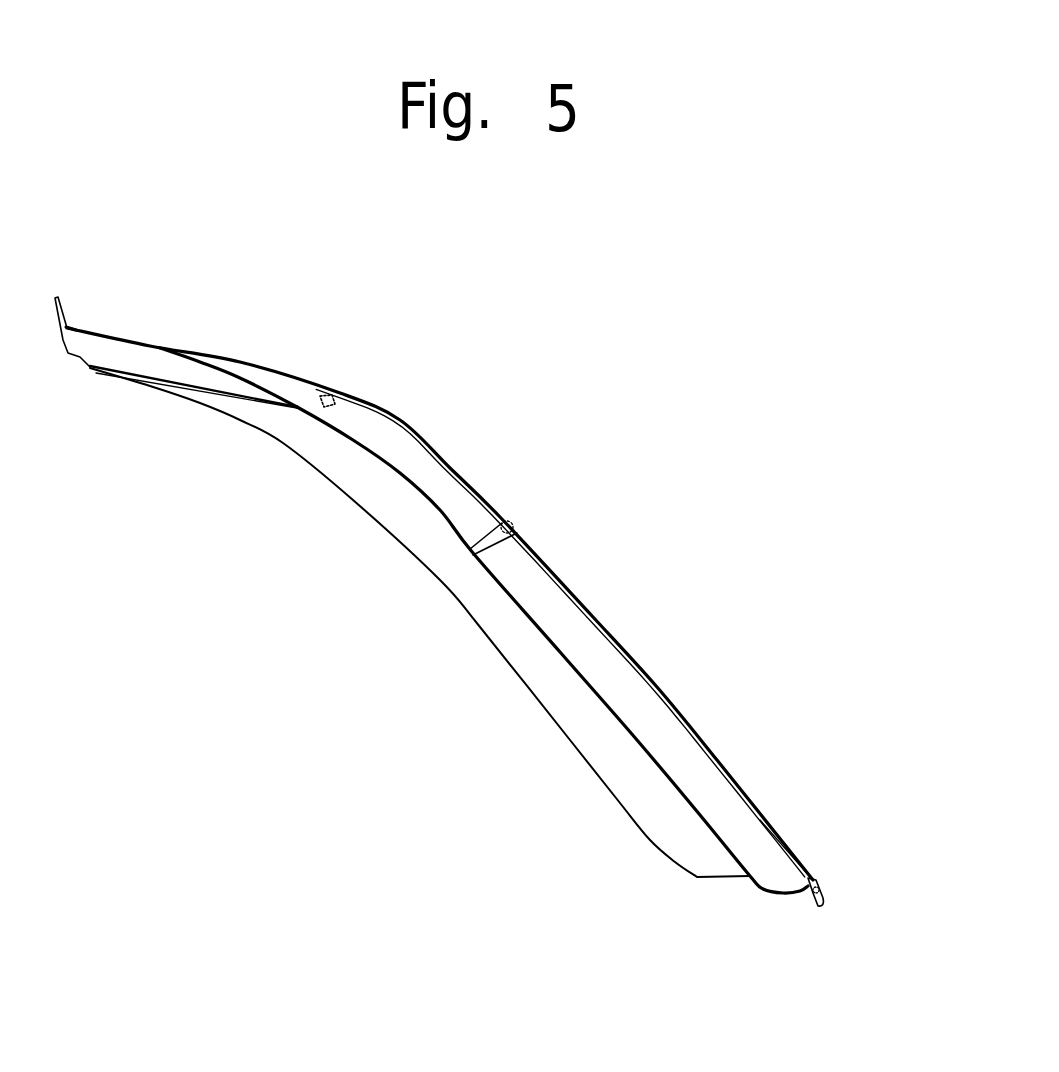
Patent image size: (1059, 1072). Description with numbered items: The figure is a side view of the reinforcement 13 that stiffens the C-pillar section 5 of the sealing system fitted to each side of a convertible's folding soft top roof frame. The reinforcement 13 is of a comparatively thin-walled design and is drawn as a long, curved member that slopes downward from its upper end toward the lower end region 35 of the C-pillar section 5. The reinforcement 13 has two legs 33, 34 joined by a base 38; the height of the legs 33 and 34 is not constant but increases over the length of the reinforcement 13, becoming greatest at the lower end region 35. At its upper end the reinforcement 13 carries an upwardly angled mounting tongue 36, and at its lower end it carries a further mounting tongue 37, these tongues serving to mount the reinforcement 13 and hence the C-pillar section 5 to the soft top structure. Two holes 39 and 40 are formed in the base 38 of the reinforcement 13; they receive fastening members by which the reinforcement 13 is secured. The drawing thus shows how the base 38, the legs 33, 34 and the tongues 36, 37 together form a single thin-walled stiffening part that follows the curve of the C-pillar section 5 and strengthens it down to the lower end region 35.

The C-pillar section 5 is at (658, 686).
The reinforcement 13 is at (596, 617).
The leg 33 is at (283, 438).
The leg 34 is at (397, 462).
The lower end region 35 is at (817, 857).
The mounting tongue 36 is at (66, 306).
The mounting tongue 37 is at (821, 904).
The base 38 is at (175, 356).
The hole 39 is at (350, 393).
The hole 40 is at (513, 513).